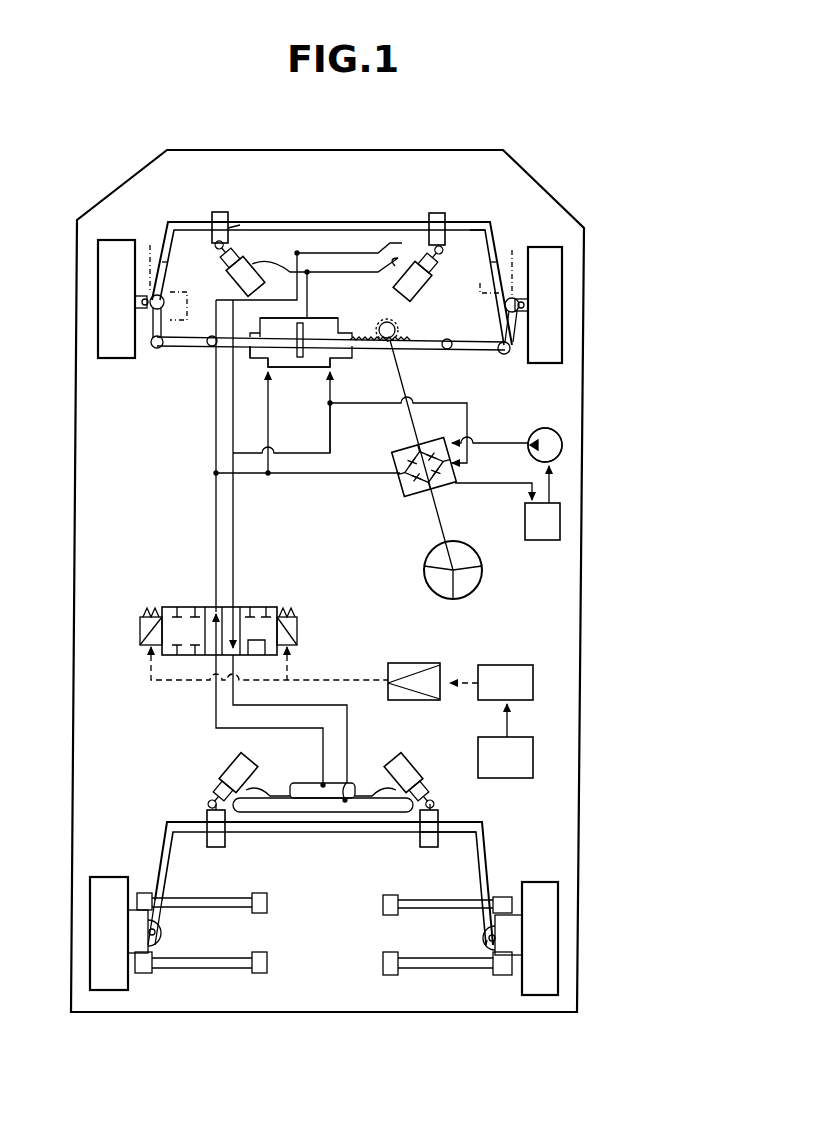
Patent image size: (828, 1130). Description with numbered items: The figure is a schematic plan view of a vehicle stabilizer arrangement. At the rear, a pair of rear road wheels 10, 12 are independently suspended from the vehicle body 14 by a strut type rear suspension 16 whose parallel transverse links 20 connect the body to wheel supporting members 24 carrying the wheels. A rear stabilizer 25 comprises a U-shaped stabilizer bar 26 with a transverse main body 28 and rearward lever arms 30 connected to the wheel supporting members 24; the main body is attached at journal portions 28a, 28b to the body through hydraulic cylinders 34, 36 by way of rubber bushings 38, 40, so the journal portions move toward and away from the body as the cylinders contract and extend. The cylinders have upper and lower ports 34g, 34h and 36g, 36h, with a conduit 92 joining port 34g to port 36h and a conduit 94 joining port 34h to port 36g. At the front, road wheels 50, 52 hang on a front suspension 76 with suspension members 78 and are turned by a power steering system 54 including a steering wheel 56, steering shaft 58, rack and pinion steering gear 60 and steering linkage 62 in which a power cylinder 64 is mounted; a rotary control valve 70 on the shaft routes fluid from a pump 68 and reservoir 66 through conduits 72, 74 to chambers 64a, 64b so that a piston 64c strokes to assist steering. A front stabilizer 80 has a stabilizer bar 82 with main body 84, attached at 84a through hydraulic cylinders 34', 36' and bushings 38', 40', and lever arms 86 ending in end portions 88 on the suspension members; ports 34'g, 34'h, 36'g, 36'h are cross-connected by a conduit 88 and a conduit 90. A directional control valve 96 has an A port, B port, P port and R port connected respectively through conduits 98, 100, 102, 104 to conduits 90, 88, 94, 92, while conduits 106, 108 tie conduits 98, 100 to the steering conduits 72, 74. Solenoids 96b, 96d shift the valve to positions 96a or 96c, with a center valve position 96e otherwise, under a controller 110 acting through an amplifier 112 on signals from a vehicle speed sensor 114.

The rear road wheel 10 is at (100, 877).
The rear road wheel 12 is at (548, 882).
The vehicle body 14 is at (72, 826).
The strut type rear suspension 16 is at (247, 1016).
The parallel transverse links 20 is at (235, 913).
The wheel supporting member 24 is at (158, 947).
The rear stabilizer 25 is at (490, 822).
The stabilizer bar 26 is at (492, 834).
The main body 28 is at (342, 834).
The attaching portion 28a is at (210, 832).
The attaching portion 28b is at (442, 828).
The lever arm 30 is at (165, 846).
The hydraulic cylinder 34 is at (217, 776).
The port 34g is at (250, 785).
The port 34h is at (232, 806).
The hydraulic cylinder 36 is at (419, 773).
The port 36g is at (394, 785).
The port 36h is at (412, 806).
The rubber bushing 38 is at (229, 850).
The rubber bushing 40 is at (428, 845).
The hydraulic cylinder 34' is at (217, 277).
The port 34'g is at (262, 278).
The port 34'h is at (277, 238).
The hydraulic cylinder 36' is at (446, 282).
The port 36'g is at (412, 289).
The port 36'h is at (360, 243).
The rubber bushing 38' is at (217, 207).
The rubber bushing 40' is at (437, 210).
The front road wheel 50 is at (122, 240).
The front road wheel 52 is at (545, 247).
The power steering system 54 is at (567, 446).
The steering wheel 56 is at (484, 572).
The steering shaft 58 is at (445, 528).
The rack and pinion steering gear 60 is at (405, 355).
The steering linkage 62 is at (168, 350).
The power cylinder 64 is at (320, 318).
The chamber 64a is at (252, 356).
The chamber 64b is at (330, 330).
The piston 64c is at (299, 381).
The reservoir 66 is at (525, 532).
The pump 68 is at (545, 428).
The rotary control valve 70 is at (400, 490).
The conduit 72 is at (268, 473).
The conduit 74 is at (356, 420).
The front suspension 76 is at (196, 212).
The suspension member 78 is at (331, 257).
The front stabilizer 80 is at (447, 216).
The stabilizer bar 82 is at (484, 222).
The main body 84 is at (320, 222).
The attaching portion 84a is at (240, 225).
The lever arm 86 is at (170, 262).
The end portion / conduit 88 is at (150, 350).
The conduit 90 is at (378, 272).
The conduit 92 is at (307, 814).
The conduit 94 is at (306, 783).
The directional control valve 96 is at (138, 636).
The valve position 96a is at (262, 607).
The solenoid 96b is at (300, 620).
The valve position 96c is at (192, 607).
The solenoid 96d is at (152, 655).
The center valve position 96e is at (226, 607).
The conduit 98 is at (214, 492).
The conduit 100 is at (231, 526).
The conduit 102 is at (214, 709).
The conduit 104 is at (349, 719).
The conduit 106 is at (246, 476).
The conduit 108 is at (281, 422).
The controller 110 is at (521, 665).
The amplifier 112 is at (405, 663).
The sensor 114 is at (518, 737).
The A port A is at (214, 607).
The B port B is at (236, 607).
The P port P is at (212, 657).
The R port R is at (236, 657).